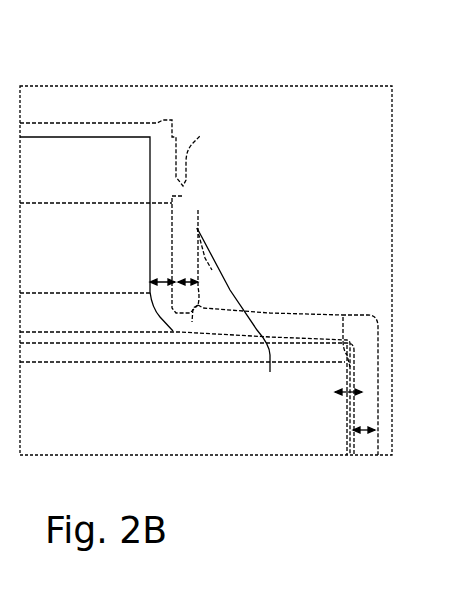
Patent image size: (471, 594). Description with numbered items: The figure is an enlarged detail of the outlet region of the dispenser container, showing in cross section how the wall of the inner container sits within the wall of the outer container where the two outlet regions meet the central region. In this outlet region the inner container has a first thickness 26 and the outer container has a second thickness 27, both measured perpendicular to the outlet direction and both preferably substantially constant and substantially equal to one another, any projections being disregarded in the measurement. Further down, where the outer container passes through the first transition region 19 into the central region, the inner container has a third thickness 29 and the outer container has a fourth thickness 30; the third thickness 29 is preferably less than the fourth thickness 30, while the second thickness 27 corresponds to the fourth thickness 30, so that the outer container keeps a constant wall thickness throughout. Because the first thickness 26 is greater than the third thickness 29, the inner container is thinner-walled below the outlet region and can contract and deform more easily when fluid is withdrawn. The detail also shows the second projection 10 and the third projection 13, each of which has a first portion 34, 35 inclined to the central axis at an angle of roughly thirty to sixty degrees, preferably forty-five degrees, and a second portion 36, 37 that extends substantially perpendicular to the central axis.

The second projection 10 is at (183, 196).
The third projection 13 is at (206, 262).
The first transition region 19 is at (235, 295).
The first thickness 26 is at (157, 281).
The second thickness 27 is at (198, 210).
The third thickness 29 is at (343, 317).
The fourth thickness 30 is at (362, 437).
The first portion 34 is at (203, 134).
The first portion 35 is at (205, 260).
The second portion 36 is at (151, 202).
The second portion 37 is at (270, 372).